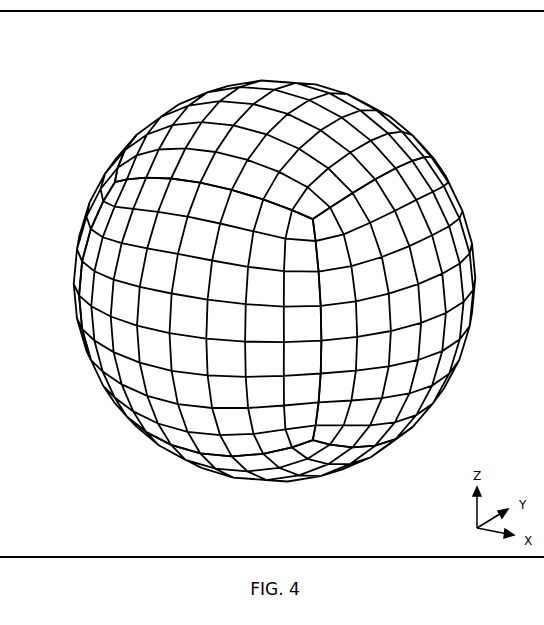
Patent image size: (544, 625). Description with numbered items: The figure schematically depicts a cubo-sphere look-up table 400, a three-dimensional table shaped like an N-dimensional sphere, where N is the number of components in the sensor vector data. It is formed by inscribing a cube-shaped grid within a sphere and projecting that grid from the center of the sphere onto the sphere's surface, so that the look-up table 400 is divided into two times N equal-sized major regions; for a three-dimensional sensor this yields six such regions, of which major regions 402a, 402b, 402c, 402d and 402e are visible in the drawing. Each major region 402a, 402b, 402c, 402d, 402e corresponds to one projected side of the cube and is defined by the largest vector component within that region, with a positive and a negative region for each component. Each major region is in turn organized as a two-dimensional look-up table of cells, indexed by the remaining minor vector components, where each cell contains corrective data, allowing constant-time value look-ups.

The cubo-sphere look-up table 400 is at (132, 108).
The major region 402a is at (460, 197).
The major region 402b is at (85, 213).
The major region 402c is at (384, 113).
The major region 402d is at (243, 476).
The major region 402e is at (143, 405).